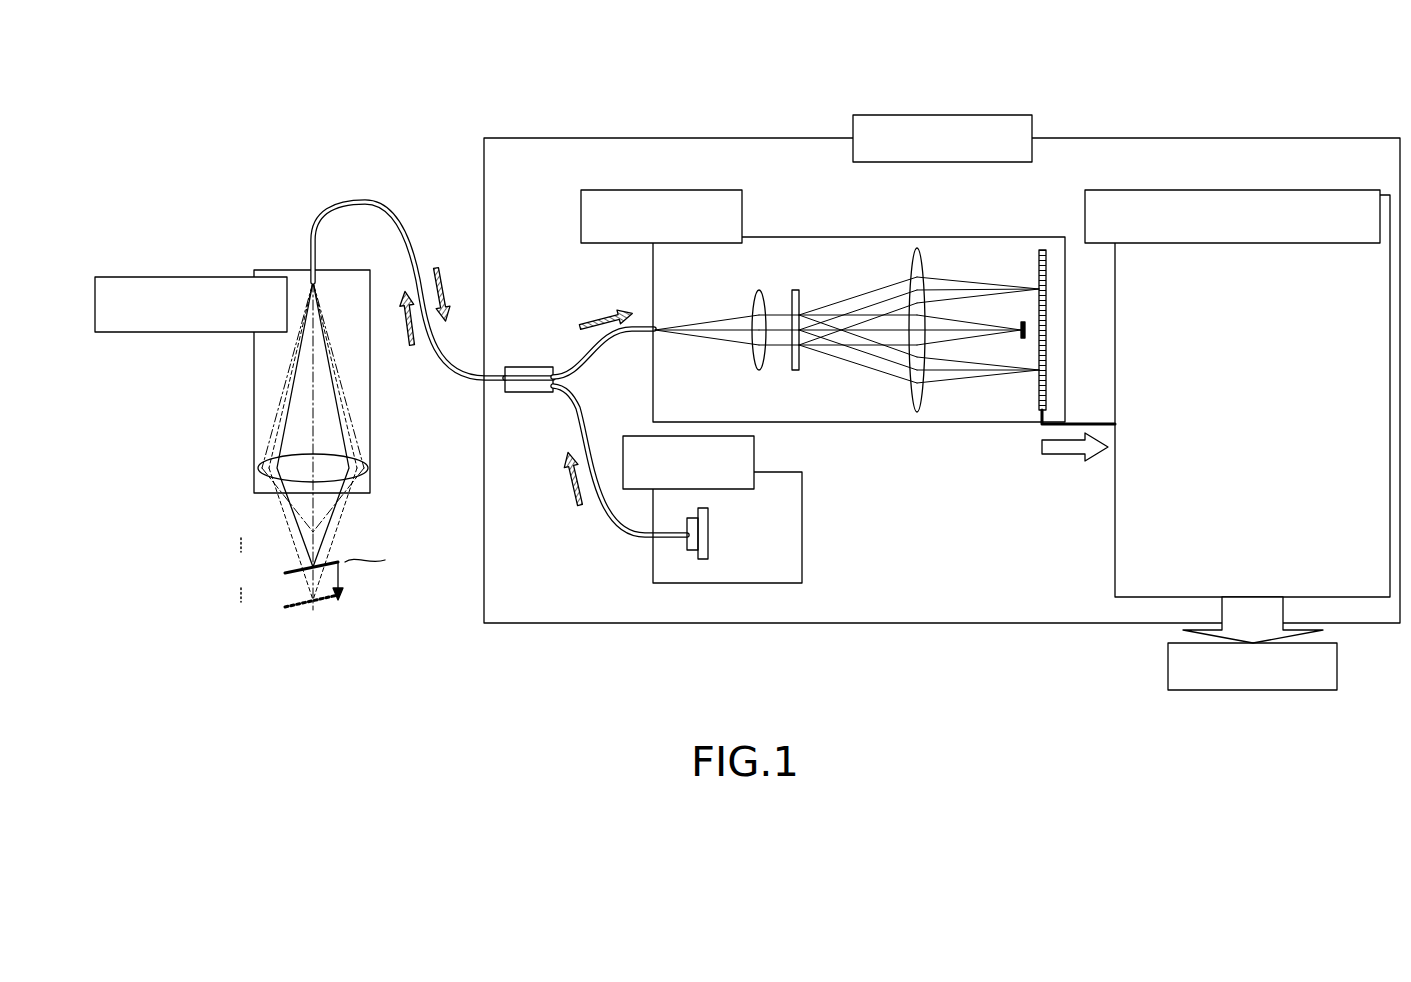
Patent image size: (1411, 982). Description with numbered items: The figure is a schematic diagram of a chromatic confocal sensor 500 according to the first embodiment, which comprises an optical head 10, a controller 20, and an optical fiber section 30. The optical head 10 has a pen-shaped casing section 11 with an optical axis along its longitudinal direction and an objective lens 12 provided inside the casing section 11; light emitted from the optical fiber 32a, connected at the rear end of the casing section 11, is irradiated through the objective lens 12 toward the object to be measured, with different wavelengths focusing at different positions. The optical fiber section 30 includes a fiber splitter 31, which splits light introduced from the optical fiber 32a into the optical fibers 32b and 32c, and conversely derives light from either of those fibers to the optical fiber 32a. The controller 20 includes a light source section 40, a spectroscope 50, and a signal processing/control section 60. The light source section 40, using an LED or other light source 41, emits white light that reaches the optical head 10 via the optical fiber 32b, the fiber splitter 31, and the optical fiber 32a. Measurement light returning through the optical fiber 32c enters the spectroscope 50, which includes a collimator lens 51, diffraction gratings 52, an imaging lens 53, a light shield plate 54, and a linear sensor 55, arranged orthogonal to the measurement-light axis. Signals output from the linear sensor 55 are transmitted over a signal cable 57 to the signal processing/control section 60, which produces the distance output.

The distance measuring device 500 is at (731, 110).
The optical head 10 is at (277, 260).
The casing section 11 is at (254, 372).
The objective lens 12 is at (262, 466).
The controller 20 is at (809, 126).
The optical fiber section 30 is at (366, 196).
The fiber splitter 31 is at (527, 366).
The optical fiber 32a is at (405, 215).
The optical fiber 32b is at (607, 515).
The optical fiber 32c is at (608, 340).
The light source section 40 is at (803, 489).
The light source 41 is at (707, 560).
The spectroscope 50 is at (870, 236).
The collimator lens 51 is at (762, 289).
The diffraction gratings 52 is at (795, 289).
The imaging lens 53 is at (918, 421).
The light shield plate 54 is at (1021, 320).
The linear sensor 55 is at (1047, 292).
The signal cable 57 is at (1091, 423).
The signal processing/control section 60 is at (1115, 528).